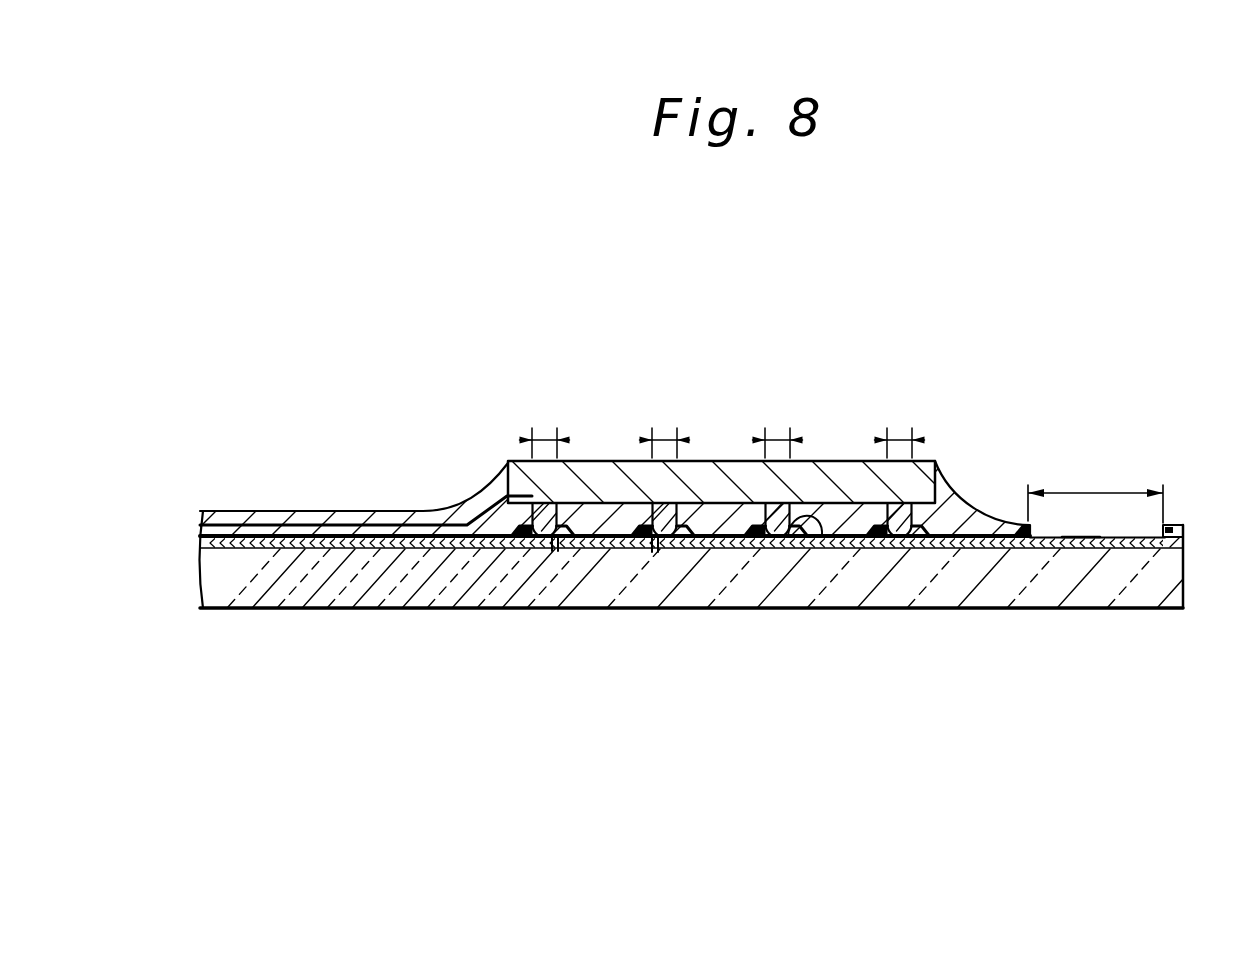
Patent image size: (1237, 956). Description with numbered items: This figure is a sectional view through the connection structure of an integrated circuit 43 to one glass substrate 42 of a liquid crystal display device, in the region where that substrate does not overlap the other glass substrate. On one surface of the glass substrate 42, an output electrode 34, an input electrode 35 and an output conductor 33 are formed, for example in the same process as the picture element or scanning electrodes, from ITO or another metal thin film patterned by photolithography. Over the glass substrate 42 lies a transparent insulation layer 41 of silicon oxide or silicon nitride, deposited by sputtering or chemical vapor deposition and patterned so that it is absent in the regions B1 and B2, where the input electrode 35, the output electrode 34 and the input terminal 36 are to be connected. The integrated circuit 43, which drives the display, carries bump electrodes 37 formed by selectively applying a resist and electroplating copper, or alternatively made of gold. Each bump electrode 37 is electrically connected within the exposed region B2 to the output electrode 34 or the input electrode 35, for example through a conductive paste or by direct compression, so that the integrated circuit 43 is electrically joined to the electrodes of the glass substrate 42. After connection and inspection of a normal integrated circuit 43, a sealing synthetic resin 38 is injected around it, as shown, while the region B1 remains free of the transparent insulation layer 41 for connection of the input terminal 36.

The output conductor 33 is at (285, 544).
The output electrode 34 is at (658, 551).
The input electrode 35 is at (902, 545).
The input terminal 36 is at (1077, 544).
The bump electrode 37 is at (820, 540).
The sealing synthetic resin 38 is at (960, 517).
The transparent insulation layer 41 is at (360, 532).
The glass substrate 42 is at (742, 592).
The integrated circuit 43 is at (922, 470).
The region B1 is at (1083, 490).
The region B2 is at (543, 438).